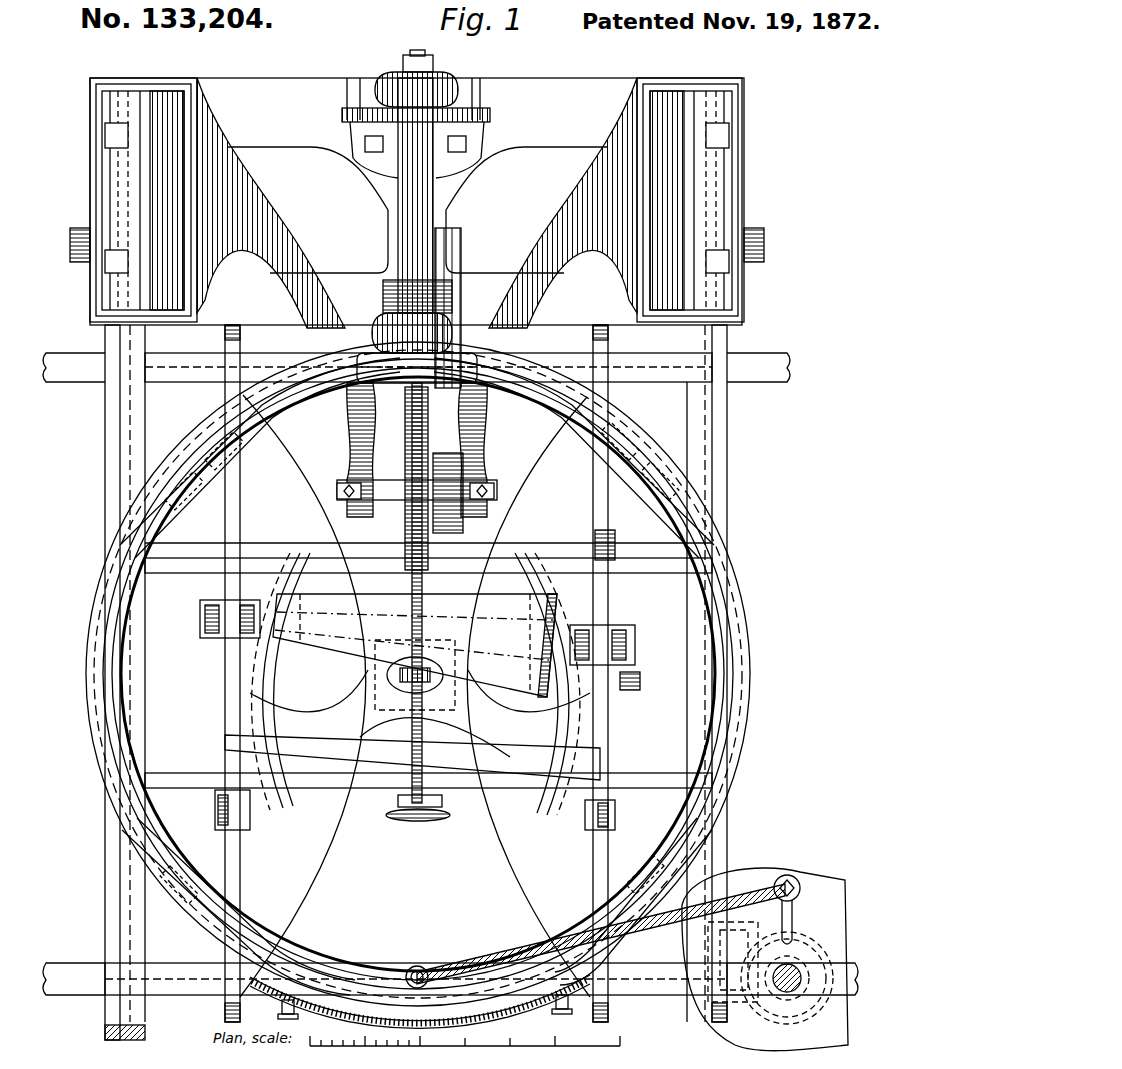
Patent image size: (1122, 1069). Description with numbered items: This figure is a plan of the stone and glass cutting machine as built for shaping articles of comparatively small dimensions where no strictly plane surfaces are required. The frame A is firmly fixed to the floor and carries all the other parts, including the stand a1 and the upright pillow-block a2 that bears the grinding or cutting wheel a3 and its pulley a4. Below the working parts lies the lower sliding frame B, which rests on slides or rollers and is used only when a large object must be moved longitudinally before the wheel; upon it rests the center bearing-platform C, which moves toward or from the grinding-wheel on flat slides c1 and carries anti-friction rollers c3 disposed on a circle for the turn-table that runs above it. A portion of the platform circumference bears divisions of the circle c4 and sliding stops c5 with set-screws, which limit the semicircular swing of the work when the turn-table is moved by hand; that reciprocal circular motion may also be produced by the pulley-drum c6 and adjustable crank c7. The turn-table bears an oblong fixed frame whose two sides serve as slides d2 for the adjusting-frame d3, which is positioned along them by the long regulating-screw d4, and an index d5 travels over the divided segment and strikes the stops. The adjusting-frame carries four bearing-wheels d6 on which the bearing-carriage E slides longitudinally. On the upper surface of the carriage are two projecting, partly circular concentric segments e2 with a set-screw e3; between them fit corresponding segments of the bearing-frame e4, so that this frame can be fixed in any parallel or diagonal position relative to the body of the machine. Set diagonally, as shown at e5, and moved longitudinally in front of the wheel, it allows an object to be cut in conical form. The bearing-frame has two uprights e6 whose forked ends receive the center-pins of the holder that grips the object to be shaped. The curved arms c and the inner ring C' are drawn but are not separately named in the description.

The stand a1 is at (417, 217).
The upright pillow-block a2 is at (440, 181).
The grinding or cutting wheel a3 is at (417, 461).
The pulley a4 is at (458, 496).
The frame A is at (451, 684).
The lower sliding frame B is at (416, 674).
The center bearing-platform C is at (418, 674).
The inner ring C' is at (466, 704).
The bearing-carriage E is at (428, 668).
The curved arms c is at (415, 696).
The flat slides c1 is at (416, 682).
The anti-friction rollers c3 is at (417, 676).
The divisions of the circle c4 is at (420, 1003).
The sliding stops c5 is at (422, 1013).
The pulley-drum c6 is at (632, 959).
The adjustable crank c7 is at (798, 909).
The slides d2 is at (234, 673).
The adjusting-frame d3 is at (223, 810).
The regulating-screw d4 is at (418, 613).
The index d5 is at (507, 673).
The bearing-wheels or anti-friction rollers d6 is at (589, 674).
The concentric segments e2 is at (416, 689).
The set-screw e3 is at (638, 682).
The bearing-frame e4 is at (412, 757).
The diagonal position of the bearing-frame e5 is at (415, 650).
The uprights e6 is at (418, 621).